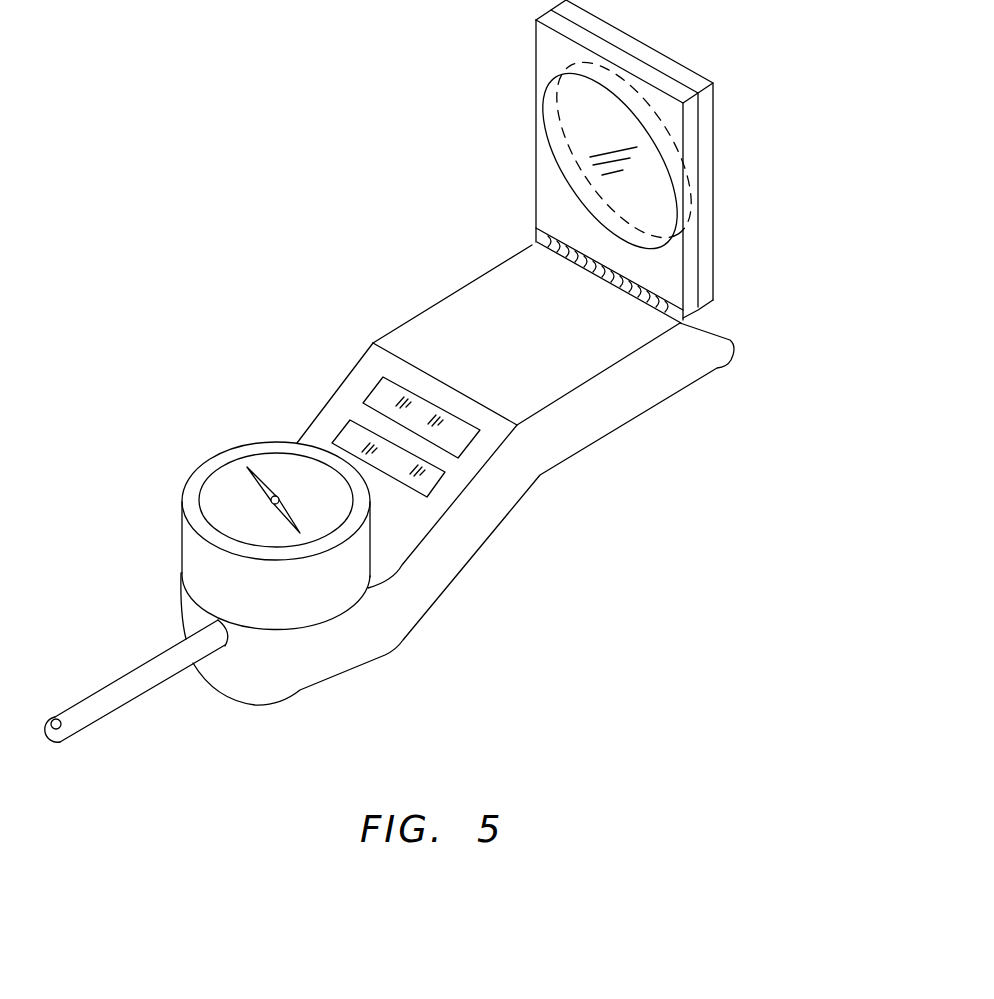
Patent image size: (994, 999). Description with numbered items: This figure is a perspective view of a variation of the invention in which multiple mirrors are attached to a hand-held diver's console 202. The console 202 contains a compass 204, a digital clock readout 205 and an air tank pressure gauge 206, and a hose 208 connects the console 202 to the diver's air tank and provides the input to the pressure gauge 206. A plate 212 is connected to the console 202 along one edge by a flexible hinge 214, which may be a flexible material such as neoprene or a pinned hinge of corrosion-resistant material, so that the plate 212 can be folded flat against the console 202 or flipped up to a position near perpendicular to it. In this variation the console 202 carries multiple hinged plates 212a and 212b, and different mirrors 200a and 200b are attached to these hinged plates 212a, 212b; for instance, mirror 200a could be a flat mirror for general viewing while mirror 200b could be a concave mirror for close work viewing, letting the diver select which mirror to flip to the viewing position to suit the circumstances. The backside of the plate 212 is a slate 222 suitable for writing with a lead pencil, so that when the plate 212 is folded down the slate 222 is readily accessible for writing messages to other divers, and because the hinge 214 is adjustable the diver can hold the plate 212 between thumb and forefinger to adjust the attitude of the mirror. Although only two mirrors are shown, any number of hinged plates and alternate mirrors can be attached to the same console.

The mirror 200a is at (548, 147).
The mirror 200b is at (562, 103).
The diver's console 202 is at (510, 517).
The compass 204 is at (213, 473).
The digital clock readout 205 is at (348, 418).
The air tank pressure gauge 206 is at (370, 389).
The hose 208 is at (142, 662).
The plate 212 is at (635, 217).
The hinged plate 212a is at (698, 272).
The hinged plate 212b is at (715, 172).
The flexible hinge 214 is at (532, 242).
The slate 222 is at (452, 288).